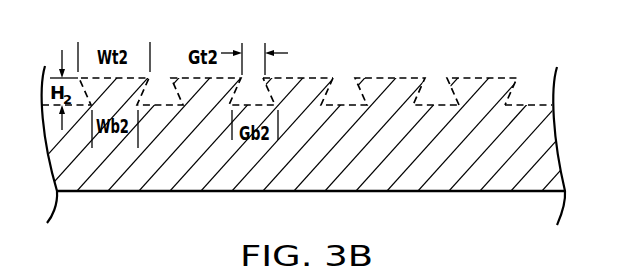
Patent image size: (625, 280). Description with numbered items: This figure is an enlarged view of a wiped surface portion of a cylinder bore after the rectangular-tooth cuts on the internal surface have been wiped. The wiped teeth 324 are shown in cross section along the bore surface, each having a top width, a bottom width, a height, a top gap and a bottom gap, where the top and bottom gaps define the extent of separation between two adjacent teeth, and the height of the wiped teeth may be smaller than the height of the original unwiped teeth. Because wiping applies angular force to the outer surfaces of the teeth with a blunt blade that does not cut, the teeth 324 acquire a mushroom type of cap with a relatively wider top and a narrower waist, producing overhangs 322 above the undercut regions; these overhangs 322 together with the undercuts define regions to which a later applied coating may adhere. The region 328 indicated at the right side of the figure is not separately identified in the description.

The overhang 322 is at (441, 74).
The wiped-tooth cut 324 is at (315, 75).
The bottom surface of groove 328 is at (526, 93).